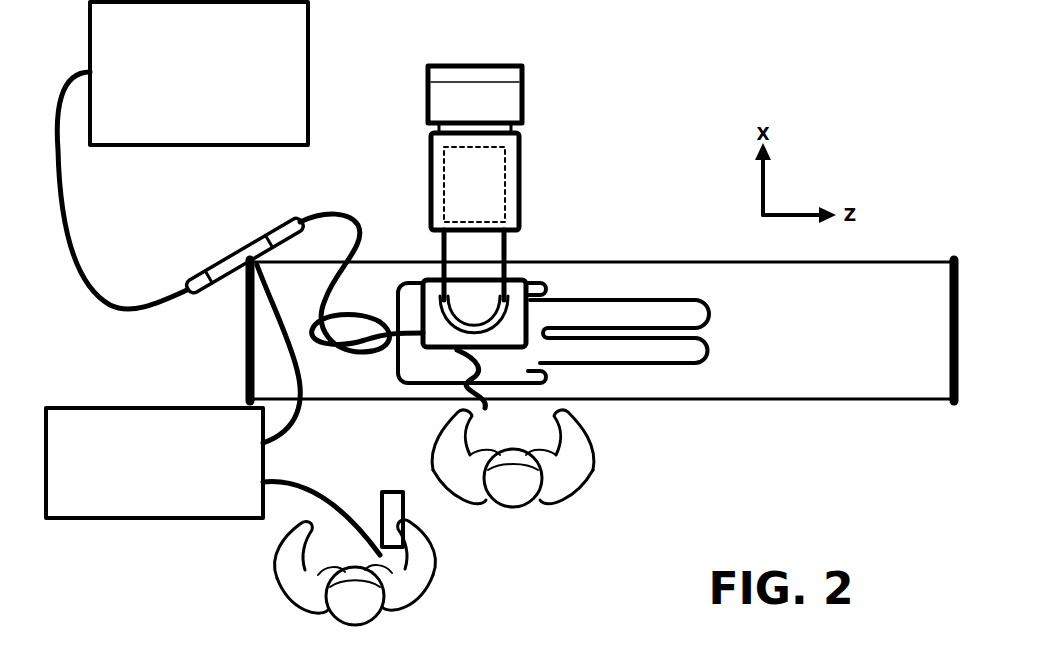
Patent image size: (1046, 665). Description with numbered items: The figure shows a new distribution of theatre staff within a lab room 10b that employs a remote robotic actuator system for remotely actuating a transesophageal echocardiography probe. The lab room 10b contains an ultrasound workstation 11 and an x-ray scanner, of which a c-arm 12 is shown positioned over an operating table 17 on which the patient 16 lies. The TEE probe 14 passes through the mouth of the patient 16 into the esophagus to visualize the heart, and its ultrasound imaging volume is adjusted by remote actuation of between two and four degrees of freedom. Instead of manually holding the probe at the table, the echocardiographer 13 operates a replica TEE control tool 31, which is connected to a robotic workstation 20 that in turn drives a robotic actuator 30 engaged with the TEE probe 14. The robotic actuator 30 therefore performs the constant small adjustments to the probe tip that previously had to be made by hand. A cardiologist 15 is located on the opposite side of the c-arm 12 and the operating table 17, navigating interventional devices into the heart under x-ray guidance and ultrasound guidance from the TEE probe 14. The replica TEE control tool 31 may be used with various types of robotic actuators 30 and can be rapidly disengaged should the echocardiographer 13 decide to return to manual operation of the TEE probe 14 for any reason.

The lab room 10b is at (763, 71).
The ultrasound workstation 11 is at (199, 73).
The c-arm 12 is at (472, 64).
The echocardiographer 13 is at (268, 585).
The TEE probe 14 is at (268, 224).
The cardiologist 15 is at (513, 508).
The patient 16 is at (712, 340).
The operating table 17 is at (647, 261).
The robotic workstation 20 is at (154, 463).
The robotic actuator 30 is at (218, 256).
The replica TEE control tool 31 is at (388, 492).